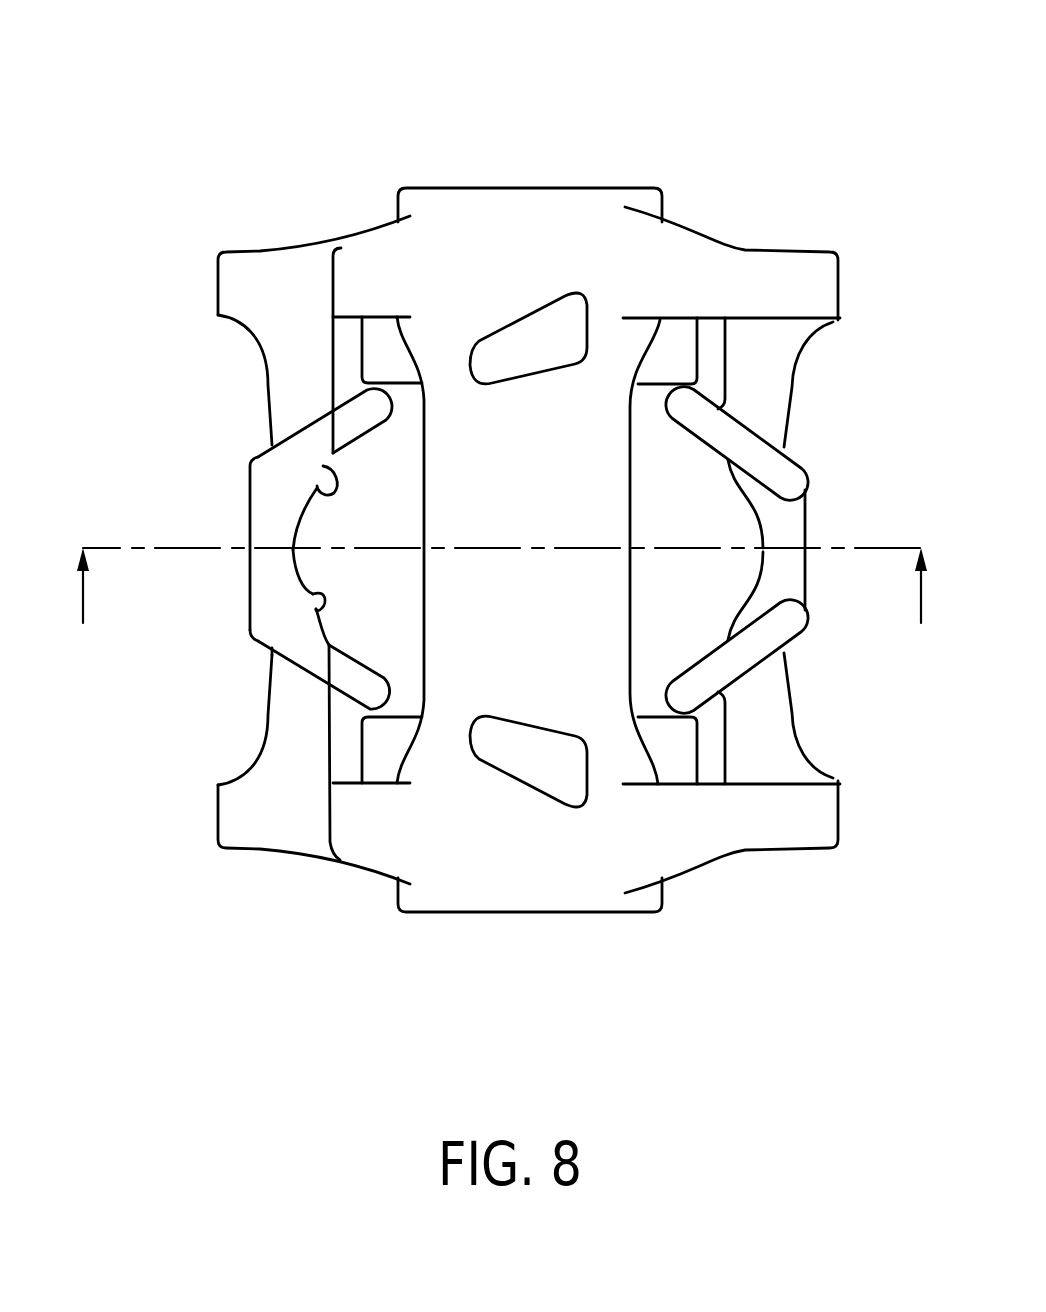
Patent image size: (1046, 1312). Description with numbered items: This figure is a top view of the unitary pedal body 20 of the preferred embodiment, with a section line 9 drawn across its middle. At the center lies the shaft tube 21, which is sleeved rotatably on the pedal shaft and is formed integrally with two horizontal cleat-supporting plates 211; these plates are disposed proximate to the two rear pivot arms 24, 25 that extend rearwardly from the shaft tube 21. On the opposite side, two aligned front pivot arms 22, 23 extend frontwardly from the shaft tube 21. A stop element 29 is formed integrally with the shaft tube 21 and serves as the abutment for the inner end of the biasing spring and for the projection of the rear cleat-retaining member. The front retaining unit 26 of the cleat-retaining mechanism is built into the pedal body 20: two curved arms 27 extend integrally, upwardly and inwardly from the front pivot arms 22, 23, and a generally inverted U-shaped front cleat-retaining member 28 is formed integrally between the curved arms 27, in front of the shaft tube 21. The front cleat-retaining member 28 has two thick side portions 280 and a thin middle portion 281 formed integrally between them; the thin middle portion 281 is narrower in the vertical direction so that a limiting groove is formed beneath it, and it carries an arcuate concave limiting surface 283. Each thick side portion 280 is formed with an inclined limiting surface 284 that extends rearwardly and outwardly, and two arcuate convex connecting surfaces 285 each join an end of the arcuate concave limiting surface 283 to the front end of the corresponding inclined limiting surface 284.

The pedal body 20 is at (422, 168).
The shaft tube 21 is at (600, 511).
The cleat-supporting plates 211 is at (528, 328).
The front pivot arm 22 is at (362, 248).
The front pivot arm 23 is at (358, 847).
The rear pivot arm 24 is at (705, 250).
The rear pivot arm 25 is at (665, 847).
The front retaining unit 26 is at (238, 494).
The curved arms 27 is at (307, 368).
The front cleat-retaining member 28 is at (265, 626).
The thick side portions 280 is at (367, 404).
The thin middle portion 281 is at (290, 535).
The arcuate concave limiting surface 283 is at (288, 567).
The inclined limiting surface 284 is at (315, 425).
The arcuate convex connecting surfaces 285 is at (323, 466).
The stop element 29 is at (683, 358).
The section line 9- 9 is at (502, 609).